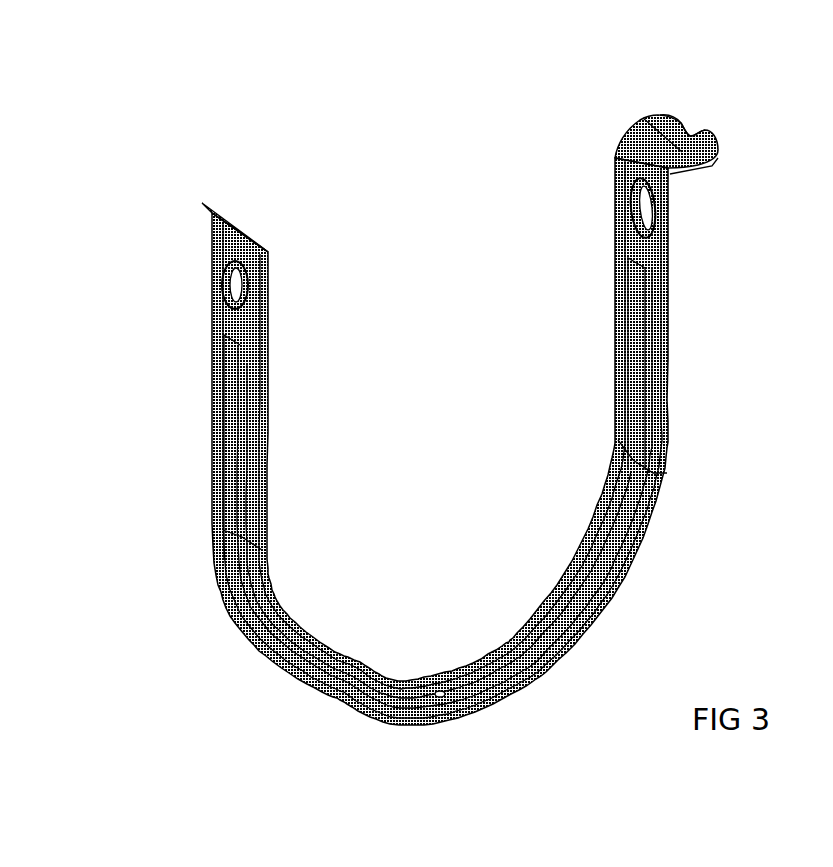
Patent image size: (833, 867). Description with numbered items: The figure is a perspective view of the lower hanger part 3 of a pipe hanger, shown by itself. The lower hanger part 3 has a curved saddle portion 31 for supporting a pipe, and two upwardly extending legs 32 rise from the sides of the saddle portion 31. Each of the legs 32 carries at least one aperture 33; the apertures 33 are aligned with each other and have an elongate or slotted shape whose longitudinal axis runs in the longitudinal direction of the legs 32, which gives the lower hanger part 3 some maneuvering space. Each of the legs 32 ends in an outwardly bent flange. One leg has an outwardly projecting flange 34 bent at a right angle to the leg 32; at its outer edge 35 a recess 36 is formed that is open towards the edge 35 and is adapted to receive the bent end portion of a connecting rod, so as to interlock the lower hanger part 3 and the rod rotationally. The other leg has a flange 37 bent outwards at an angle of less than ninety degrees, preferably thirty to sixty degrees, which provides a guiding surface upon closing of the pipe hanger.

The lower hanger part 3 is at (437, 416).
The saddle portion 31 is at (516, 700).
The legs 32 is at (226, 440).
The aperture 33 is at (232, 283).
The flange 34 is at (663, 118).
The outer edge 35 is at (684, 119).
The recess 36 is at (696, 129).
The flange 37 is at (214, 212).